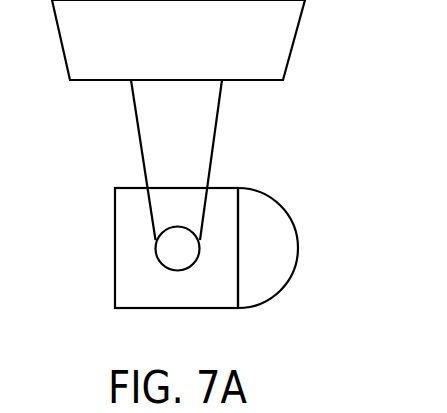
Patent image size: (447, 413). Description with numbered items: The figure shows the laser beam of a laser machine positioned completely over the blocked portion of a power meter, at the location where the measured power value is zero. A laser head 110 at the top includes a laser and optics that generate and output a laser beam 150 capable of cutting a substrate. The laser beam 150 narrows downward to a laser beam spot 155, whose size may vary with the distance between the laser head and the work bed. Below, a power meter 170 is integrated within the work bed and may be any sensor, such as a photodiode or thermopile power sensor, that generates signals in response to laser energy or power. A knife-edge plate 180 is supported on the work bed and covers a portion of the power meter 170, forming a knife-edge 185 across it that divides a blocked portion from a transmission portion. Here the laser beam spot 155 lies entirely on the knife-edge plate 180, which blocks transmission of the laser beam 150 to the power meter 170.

The laser head 110 is at (295, 42).
The laser beam 150 is at (215, 137).
The laser beam spot 155 is at (155, 252).
The power meter 170 is at (298, 248).
The knife-edge plate 180 is at (115, 302).
The knife-edge 185 is at (238, 285).